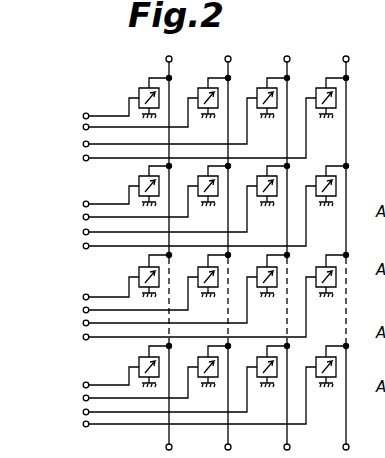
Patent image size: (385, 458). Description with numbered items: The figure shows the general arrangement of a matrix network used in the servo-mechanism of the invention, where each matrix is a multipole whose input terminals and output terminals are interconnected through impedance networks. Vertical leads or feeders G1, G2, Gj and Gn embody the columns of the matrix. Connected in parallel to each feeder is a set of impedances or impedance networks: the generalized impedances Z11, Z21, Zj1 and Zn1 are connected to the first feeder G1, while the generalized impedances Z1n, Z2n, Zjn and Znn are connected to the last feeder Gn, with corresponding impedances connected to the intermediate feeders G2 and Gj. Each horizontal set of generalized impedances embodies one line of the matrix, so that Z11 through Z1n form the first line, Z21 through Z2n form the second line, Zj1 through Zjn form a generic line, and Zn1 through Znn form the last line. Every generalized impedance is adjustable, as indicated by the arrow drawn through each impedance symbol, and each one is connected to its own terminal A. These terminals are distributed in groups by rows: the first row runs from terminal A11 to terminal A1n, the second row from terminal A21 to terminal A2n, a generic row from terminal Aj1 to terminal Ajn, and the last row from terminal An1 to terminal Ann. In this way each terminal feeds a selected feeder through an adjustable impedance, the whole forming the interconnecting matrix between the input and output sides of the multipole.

The feeder G1 is at (180, 243).
The feeder G2 is at (235, 244).
The feeder Gj is at (293, 244).
The feeder Gn is at (354, 244).
The generalized impedance Z11 is at (130, 96).
The generalized impedance Z1n is at (219, 112).
The generalized impedance Z21 is at (130, 183).
The generalized impedance Z2n is at (219, 203).
The generalized impedance Zj1 is at (130, 274).
The generalized impedance Zjn is at (219, 293).
The generalized impedance Zn1 is at (130, 365).
The generalized impedance Znn is at (219, 382).
The terminal A11 is at (69, 108).
The terminal A1n is at (68, 164).
The terminal A21 is at (67, 198).
The terminal A2n is at (70, 247).
The terminal Aj1 is at (65, 290).
The terminal Ajn is at (68, 336).
The terminal An1 is at (66, 379).
The terminal Ann is at (66, 426).